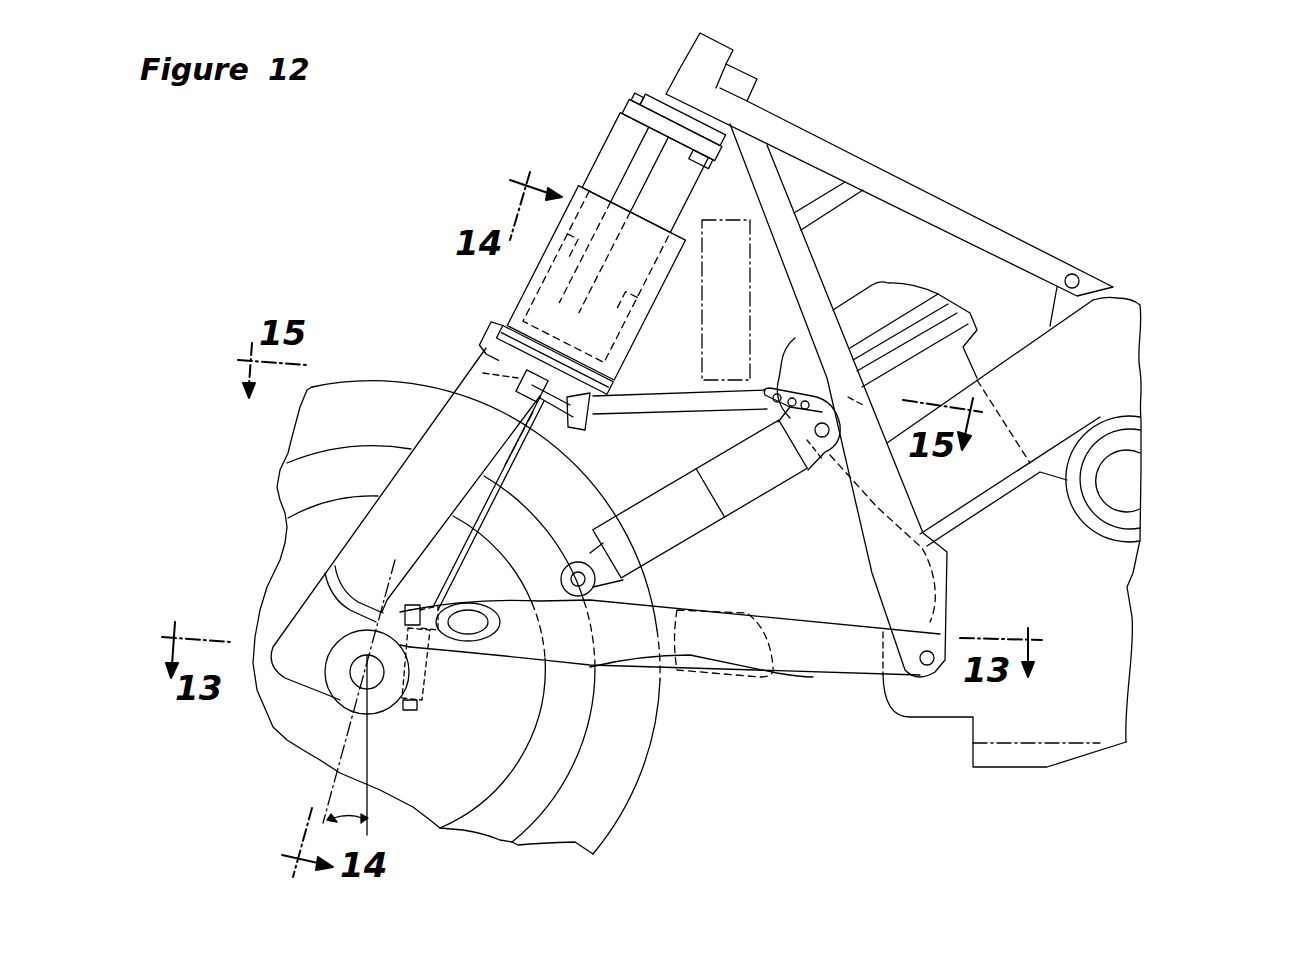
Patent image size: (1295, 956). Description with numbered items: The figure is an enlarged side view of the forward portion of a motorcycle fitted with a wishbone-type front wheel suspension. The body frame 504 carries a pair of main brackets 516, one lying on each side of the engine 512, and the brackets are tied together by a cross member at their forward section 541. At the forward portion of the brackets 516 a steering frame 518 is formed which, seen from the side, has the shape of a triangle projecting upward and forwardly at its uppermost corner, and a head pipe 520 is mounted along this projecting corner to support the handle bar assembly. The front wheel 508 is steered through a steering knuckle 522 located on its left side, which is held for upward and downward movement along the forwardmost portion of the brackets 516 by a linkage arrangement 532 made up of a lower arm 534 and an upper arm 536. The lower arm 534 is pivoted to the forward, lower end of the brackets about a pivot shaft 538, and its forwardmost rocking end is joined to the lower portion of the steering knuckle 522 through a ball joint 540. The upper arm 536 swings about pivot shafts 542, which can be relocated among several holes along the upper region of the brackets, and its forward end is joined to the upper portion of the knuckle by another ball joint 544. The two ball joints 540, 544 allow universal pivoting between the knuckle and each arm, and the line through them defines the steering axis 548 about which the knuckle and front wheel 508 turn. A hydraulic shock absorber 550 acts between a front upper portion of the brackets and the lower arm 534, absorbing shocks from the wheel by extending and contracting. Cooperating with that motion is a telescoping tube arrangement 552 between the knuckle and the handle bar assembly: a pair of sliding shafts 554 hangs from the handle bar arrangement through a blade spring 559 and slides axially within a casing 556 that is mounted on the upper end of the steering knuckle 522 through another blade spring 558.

The body frame 504 is at (1136, 288).
The front wheel 508 is at (620, 803).
The engine 512 is at (1125, 577).
The main brackets 516 is at (1040, 360).
The steering frame 518 is at (930, 205).
The head pipe 520 is at (693, 47).
The steering knuckle 522 is at (427, 460).
The linkage arrangement 532 is at (718, 728).
The lower arm 534 is at (857, 668).
The upper arm 536 is at (693, 400).
The pivot shaft 538 is at (927, 667).
The ball joint 540 is at (398, 612).
The forward section 541 is at (947, 542).
The pivot shafts 542 is at (833, 490).
The ball joint 544 is at (515, 380).
The steering axis 548 is at (330, 802).
The hydraulic shock absorber 550 is at (712, 470).
The telescoping tube arrangement 552 is at (605, 134).
The sliding shafts 554 is at (673, 213).
The casing 556 is at (577, 193).
The blade spring 558 is at (473, 363).
The blade spring 559 is at (660, 107).